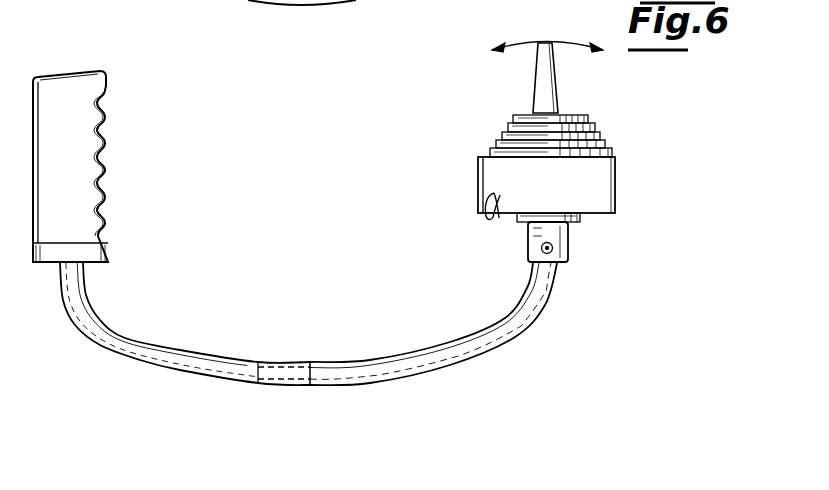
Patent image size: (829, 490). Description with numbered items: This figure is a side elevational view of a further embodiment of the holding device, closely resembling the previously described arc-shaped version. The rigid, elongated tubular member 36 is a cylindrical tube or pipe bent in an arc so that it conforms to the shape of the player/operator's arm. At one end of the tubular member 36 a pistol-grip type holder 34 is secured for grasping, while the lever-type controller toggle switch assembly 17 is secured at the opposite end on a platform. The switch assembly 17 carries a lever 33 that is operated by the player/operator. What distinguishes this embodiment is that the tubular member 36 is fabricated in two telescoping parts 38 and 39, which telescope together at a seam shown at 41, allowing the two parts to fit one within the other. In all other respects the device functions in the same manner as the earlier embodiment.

The lever-type controller toggle switch assembly 17 is at (598, 172).
The handle lever 33 is at (559, 75).
The pistol-grip type holder 34 is at (58, 80).
The elongated member 36 is at (277, 361).
The telescoping part 38 is at (187, 358).
The telescoping part 39 is at (399, 367).
The seam 41 is at (310, 376).